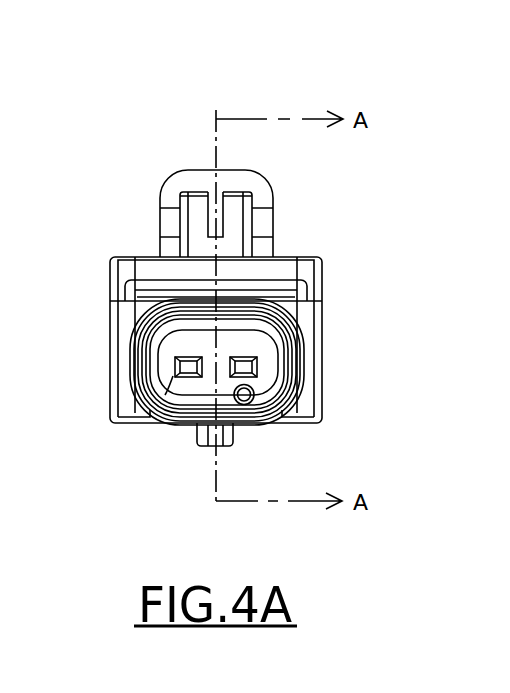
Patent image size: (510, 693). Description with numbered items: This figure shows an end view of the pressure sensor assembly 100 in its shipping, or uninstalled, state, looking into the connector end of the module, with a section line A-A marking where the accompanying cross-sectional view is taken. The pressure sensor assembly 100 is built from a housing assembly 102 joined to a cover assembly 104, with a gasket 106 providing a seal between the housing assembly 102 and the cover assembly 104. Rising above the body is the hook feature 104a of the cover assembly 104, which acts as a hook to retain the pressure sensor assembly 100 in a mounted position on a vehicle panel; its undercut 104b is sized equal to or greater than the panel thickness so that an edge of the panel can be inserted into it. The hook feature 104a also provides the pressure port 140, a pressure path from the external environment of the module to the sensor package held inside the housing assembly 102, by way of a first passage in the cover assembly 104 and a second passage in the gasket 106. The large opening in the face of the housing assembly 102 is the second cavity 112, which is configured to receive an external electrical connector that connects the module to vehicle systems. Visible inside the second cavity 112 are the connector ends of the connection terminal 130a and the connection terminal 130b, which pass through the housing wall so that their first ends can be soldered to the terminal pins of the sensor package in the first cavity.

The pressure sensor assembly 100 is at (173, 38).
The housing assembly 102 is at (323, 323).
The cover assembly 104 is at (110, 277).
The hook feature 104a is at (160, 221).
The undercut 104b is at (170, 240).
The gasket 106 is at (275, 284).
The second cavity 112 is at (149, 423).
The connection terminal 130a is at (257, 365).
The connection terminal 130b is at (173, 367).
The pressure port 140 is at (197, 206).